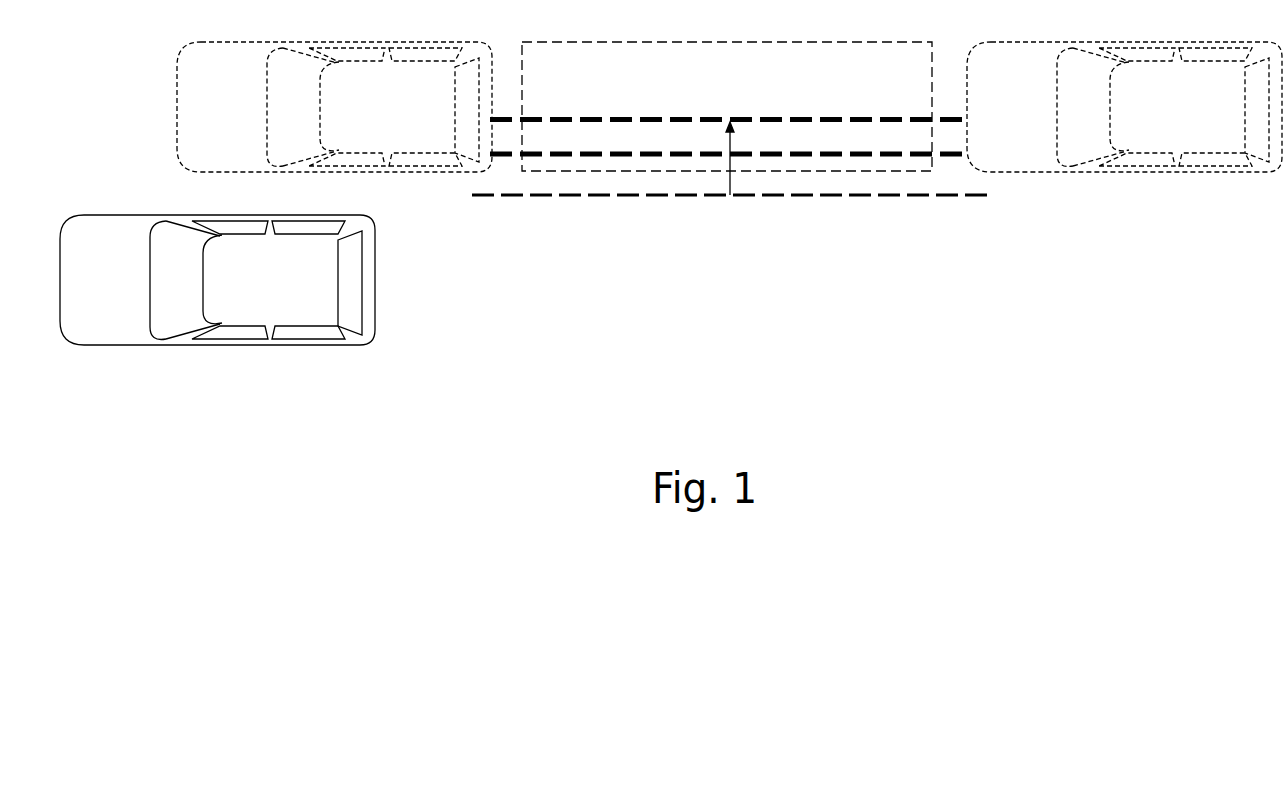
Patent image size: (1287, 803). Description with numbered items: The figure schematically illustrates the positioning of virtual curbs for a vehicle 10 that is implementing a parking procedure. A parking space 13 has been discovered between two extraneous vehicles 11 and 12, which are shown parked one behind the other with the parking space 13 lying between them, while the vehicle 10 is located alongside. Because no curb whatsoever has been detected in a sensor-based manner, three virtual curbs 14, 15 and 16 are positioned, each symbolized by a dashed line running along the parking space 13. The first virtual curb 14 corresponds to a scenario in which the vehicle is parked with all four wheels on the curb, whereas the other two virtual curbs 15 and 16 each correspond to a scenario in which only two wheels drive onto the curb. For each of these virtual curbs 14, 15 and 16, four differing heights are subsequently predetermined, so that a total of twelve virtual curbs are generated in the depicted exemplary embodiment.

The vehicle 10 is at (292, 287).
The extraneous vehicle 11 is at (408, 116).
The extraneous vehicle 12 is at (1197, 116).
The parking space 13 is at (742, 97).
The first virtual curb 14 is at (897, 197).
The virtual curb 15 is at (797, 156).
The virtual curb 16 is at (680, 122).